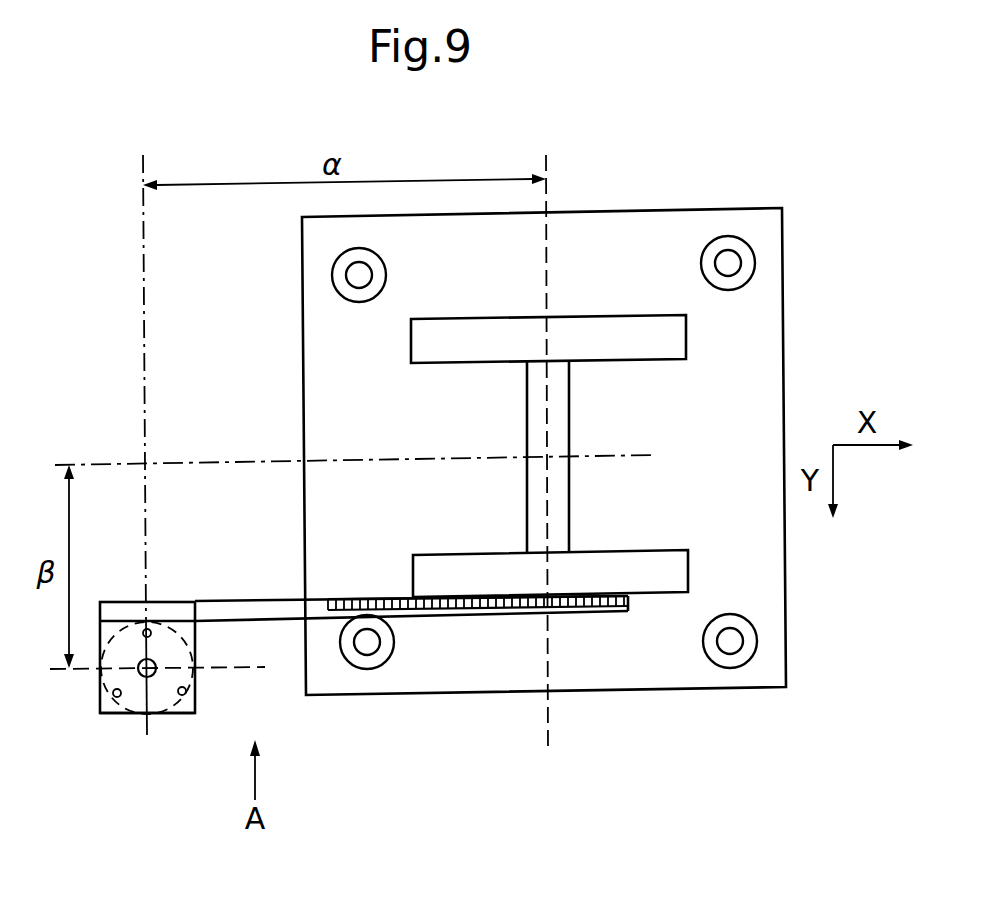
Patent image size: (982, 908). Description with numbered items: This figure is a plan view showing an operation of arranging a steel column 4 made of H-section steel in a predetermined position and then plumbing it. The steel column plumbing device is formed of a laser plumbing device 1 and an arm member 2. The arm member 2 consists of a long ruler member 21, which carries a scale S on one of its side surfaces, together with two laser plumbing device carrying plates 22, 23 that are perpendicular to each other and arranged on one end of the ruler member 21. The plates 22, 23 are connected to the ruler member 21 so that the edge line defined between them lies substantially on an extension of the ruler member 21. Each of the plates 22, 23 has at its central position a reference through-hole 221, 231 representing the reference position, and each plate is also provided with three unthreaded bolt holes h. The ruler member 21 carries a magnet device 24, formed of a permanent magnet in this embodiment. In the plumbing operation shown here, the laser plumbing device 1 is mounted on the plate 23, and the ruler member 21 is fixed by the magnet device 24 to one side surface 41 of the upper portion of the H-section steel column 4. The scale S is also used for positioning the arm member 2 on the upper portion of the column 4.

The laser plumbing device 1 is at (176, 708).
The arm member 2 is at (339, 645).
The ruler member 21 is at (312, 604).
The laser plumbing device carrying plate 22 is at (119, 600).
The reference through-hole 221 is at (150, 625).
The laser plumbing device carrying plate 23 is at (110, 713).
The reference through-hole 231 is at (145, 678).
The magnet device 24 is at (533, 610).
The steel column 4 is at (476, 316).
The side surface 41 is at (660, 588).
The scale S is at (377, 596).
The unthreaded bolt hole h is at (152, 634).